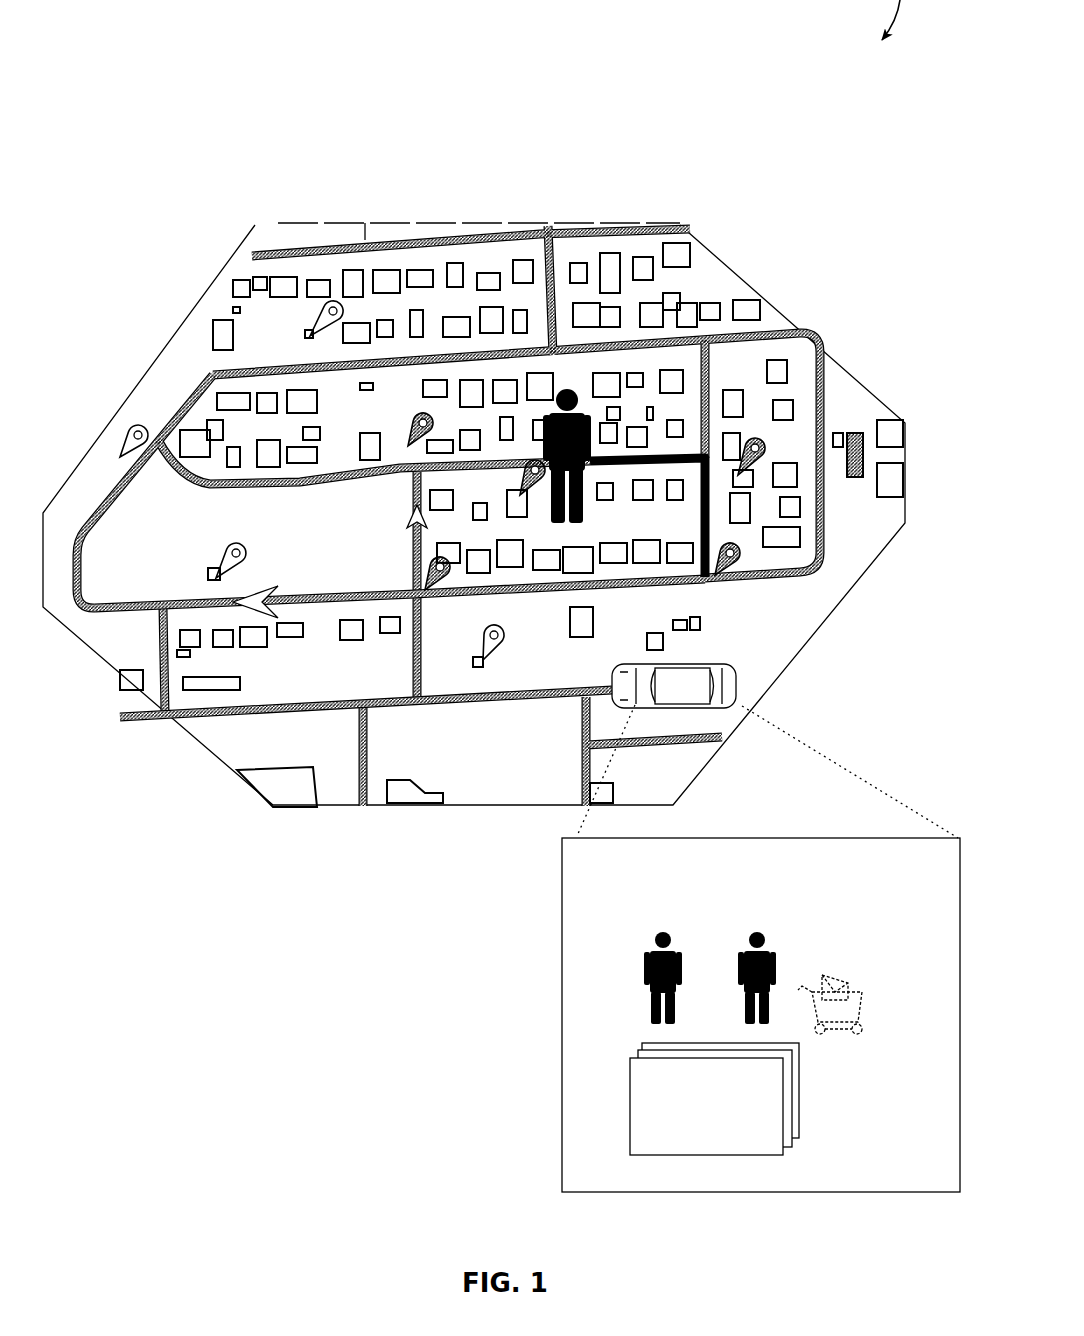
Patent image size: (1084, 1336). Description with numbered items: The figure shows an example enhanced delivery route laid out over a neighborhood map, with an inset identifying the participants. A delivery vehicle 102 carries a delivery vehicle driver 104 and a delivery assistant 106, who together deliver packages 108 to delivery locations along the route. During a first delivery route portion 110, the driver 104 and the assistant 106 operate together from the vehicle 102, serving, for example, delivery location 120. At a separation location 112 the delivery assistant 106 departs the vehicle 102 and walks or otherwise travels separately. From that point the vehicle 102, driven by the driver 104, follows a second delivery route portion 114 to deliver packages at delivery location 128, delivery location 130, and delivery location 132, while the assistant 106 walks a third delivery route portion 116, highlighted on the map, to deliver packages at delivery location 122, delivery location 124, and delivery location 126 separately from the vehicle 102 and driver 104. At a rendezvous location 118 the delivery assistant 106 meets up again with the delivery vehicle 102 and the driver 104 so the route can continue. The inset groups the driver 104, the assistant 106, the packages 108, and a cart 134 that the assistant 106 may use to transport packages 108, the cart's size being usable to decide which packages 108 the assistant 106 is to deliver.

The delivery vehicle 102 is at (738, 692).
The delivery vehicle driver 104 is at (660, 932).
The delivery assistant 106 is at (568, 386).
The packages 108 is at (691, 1139).
The first delivery route portion 110 is at (505, 695).
The separation location 112 is at (450, 584).
The second delivery route portion 114 is at (335, 598).
The third delivery route portion 116 is at (602, 462).
The rendezvous location 118 is at (718, 576).
The delivery location 120 is at (490, 660).
The delivery location 122 is at (417, 439).
The delivery location 124 is at (527, 480).
The delivery location 126 is at (758, 450).
The delivery location 128 is at (214, 580).
The delivery location 130 is at (140, 420).
The delivery location 132 is at (337, 302).
The delivery cart 134 is at (850, 985).